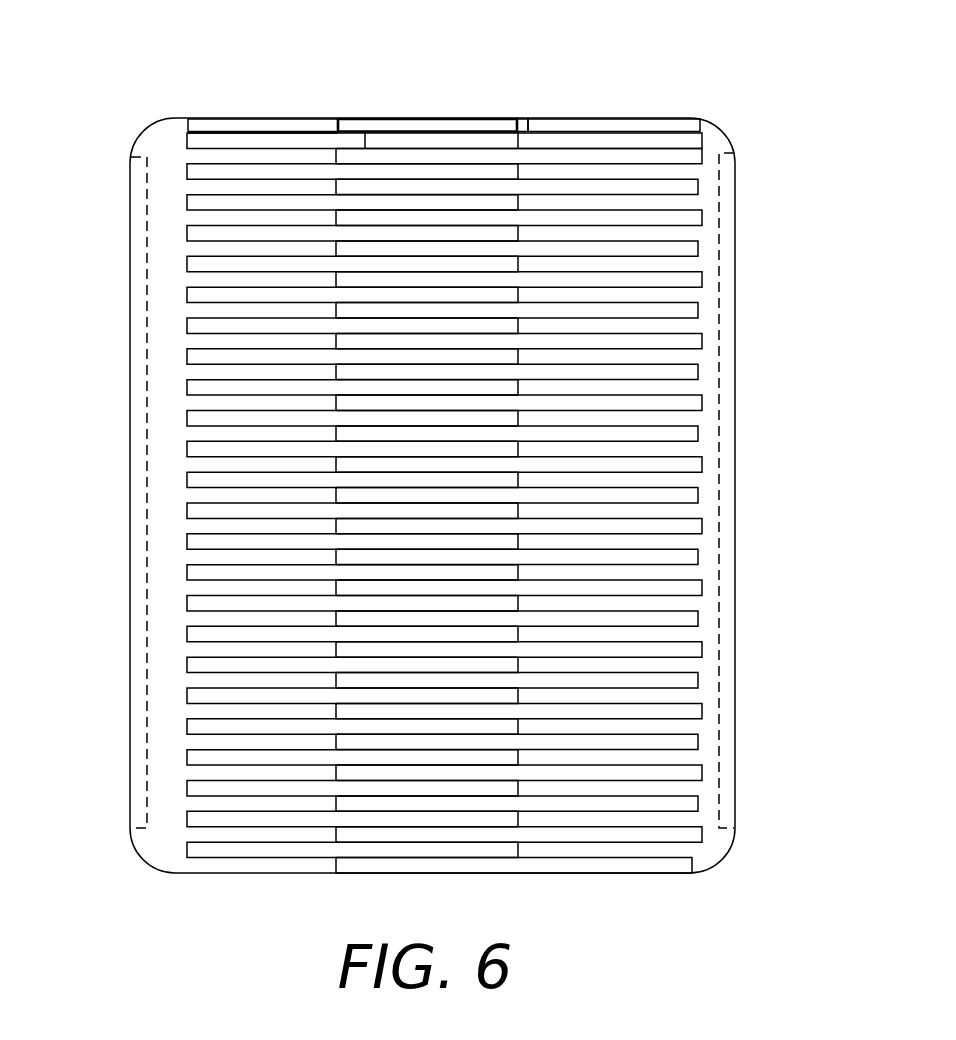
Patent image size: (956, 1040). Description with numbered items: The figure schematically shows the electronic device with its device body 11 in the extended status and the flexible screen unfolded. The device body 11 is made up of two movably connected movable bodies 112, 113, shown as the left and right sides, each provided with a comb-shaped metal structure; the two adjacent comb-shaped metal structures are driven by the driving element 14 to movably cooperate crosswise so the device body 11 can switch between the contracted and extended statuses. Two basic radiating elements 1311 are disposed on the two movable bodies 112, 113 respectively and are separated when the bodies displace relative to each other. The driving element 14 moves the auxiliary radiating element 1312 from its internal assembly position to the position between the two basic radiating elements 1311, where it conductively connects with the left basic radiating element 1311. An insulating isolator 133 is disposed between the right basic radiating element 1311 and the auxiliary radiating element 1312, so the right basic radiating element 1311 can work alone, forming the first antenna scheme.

The device body 11 is at (112, 746).
The driving element 14 is at (150, 400).
The movable body 112 is at (165, 517).
The movable body 113 is at (700, 545).
The insulating isolator 133 is at (240, 133).
The basic radiating element 1311 is at (227, 124).
The auxiliary radiating element 1312 is at (395, 118).